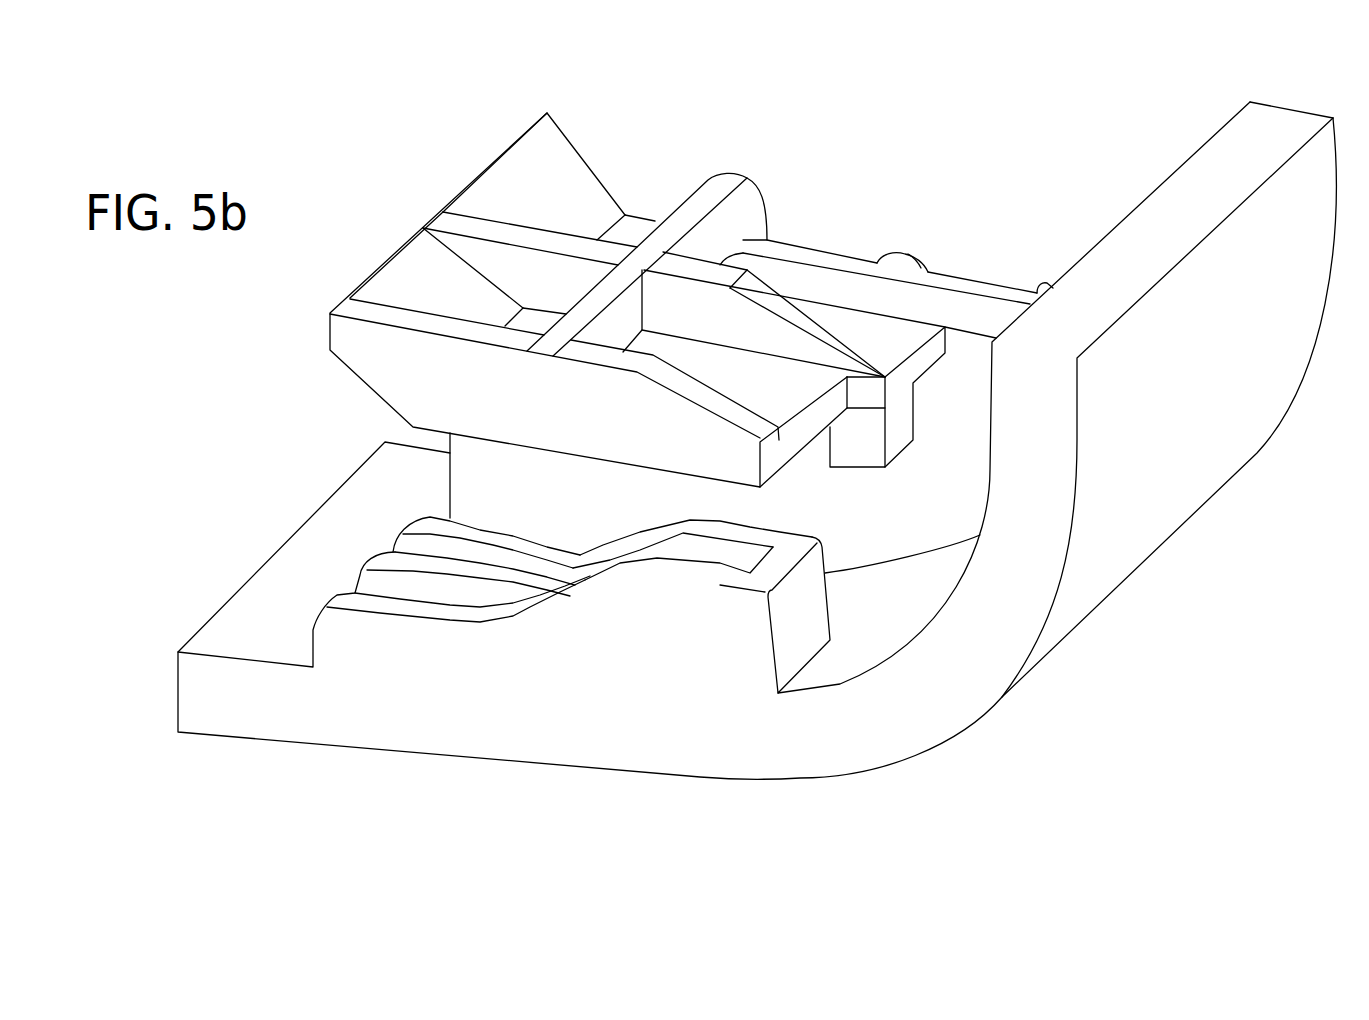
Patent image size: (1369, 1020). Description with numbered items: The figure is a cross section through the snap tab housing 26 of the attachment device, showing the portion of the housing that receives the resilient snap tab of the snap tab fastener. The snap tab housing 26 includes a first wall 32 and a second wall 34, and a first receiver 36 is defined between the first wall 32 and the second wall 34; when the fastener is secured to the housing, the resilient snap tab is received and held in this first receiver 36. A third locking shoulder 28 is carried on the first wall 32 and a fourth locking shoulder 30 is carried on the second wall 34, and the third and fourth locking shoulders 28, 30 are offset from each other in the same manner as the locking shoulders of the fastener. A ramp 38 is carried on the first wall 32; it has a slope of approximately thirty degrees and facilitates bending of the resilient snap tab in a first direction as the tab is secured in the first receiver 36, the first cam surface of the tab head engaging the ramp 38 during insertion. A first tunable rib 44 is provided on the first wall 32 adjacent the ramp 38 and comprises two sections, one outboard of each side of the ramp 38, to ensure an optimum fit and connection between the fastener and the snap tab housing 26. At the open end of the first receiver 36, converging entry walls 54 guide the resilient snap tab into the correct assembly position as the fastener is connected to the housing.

The snap tab housing 26 is at (463, 123).
The converging entry walls 54 is at (542, 195).
The second wall 34 is at (787, 382).
The fourth locking shoulder 30 is at (907, 418).
The first receiver 36 is at (248, 521).
The first wall 32 is at (521, 717).
The ramp 38 is at (550, 567).
The first tunable rib 44 is at (556, 548).
The third locking shoulder 28 is at (802, 628).